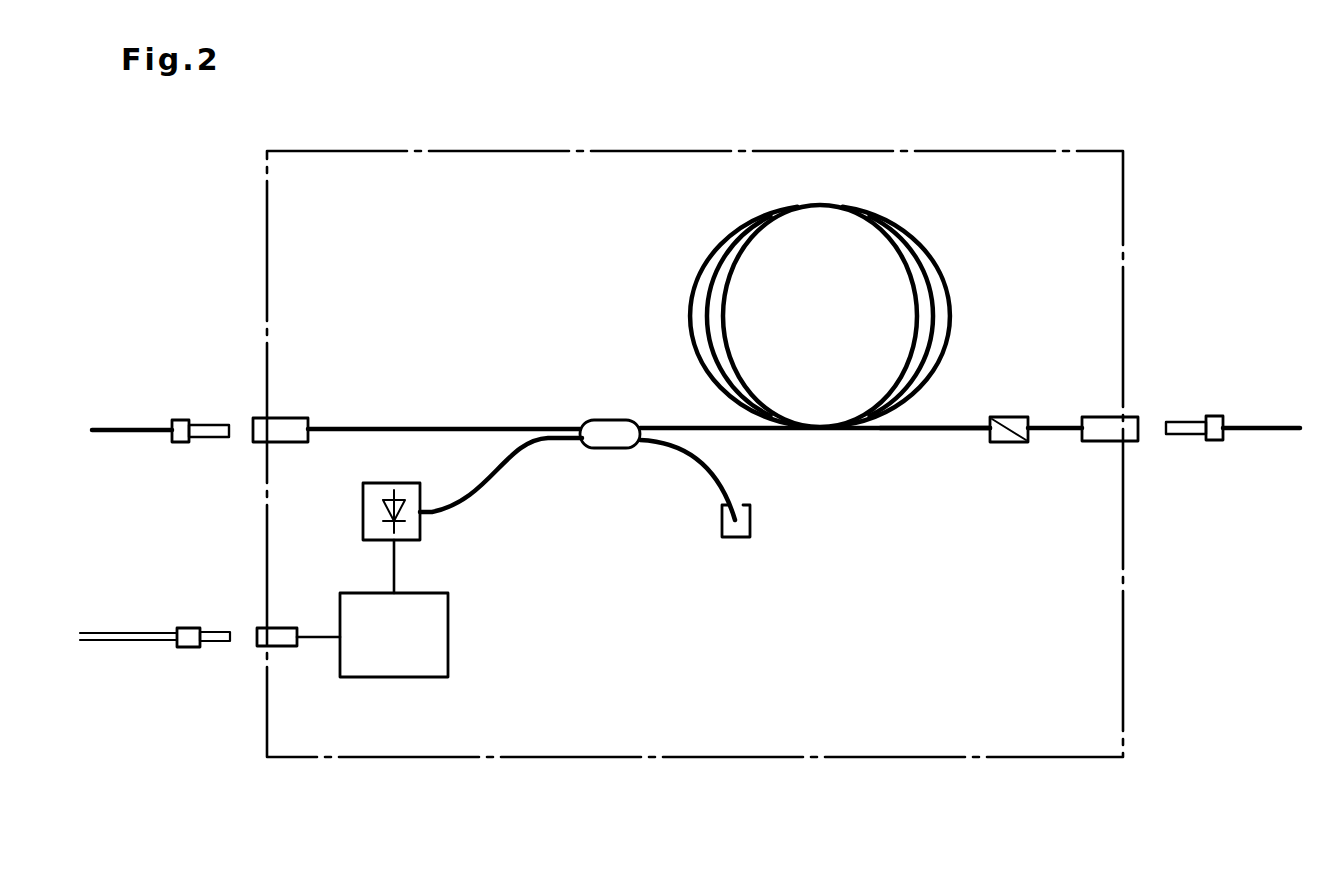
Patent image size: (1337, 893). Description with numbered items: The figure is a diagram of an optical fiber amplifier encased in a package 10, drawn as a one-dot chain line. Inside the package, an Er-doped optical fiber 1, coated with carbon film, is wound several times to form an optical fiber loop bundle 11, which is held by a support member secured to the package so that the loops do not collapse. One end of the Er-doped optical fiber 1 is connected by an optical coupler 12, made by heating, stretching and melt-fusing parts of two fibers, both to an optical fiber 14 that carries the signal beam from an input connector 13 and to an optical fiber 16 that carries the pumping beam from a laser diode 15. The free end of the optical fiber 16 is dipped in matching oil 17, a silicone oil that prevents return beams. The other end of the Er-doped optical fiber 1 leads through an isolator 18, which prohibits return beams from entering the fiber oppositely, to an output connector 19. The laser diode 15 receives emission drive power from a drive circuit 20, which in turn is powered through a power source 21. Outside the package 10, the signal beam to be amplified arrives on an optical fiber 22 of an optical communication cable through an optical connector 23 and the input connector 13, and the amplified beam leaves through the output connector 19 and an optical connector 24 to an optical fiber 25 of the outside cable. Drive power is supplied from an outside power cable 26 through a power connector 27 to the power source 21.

The Er-doped optical fiber 1 is at (962, 428).
The package 10 is at (787, 758).
The optical fiber loop bundle 11 is at (893, 270).
The optical coupler 12 is at (607, 419).
The input connector 13 is at (290, 418).
The optical fiber for inputting a signal beam 14 is at (467, 426).
The laser diode 15 is at (363, 502).
The optical fiber for inputting a pumping beam 16 is at (507, 478).
The matching oil 17 is at (751, 523).
The isolator 18 is at (1013, 442).
The output connector 19 is at (1106, 441).
The drive circuit 20 is at (448, 651).
The power source 21 is at (263, 647).
The optical fiber 22 is at (123, 428).
The optical connector 23 is at (200, 426).
The optical connector 24 is at (1197, 435).
The optical fiber 25 is at (1262, 427).
The outside power cable 26 is at (148, 642).
The power connector 27 is at (192, 628).